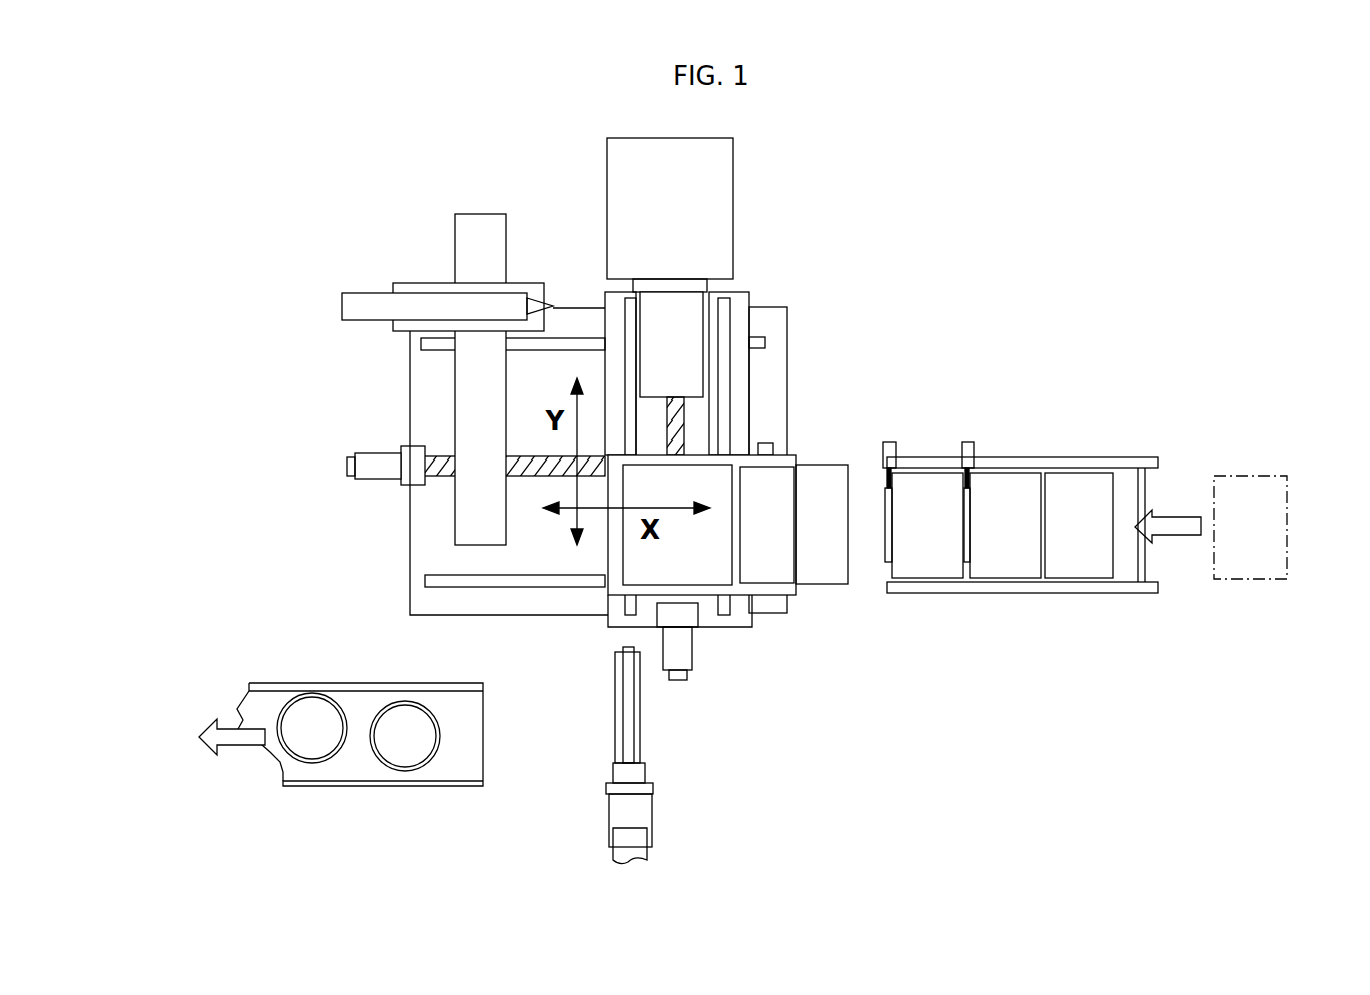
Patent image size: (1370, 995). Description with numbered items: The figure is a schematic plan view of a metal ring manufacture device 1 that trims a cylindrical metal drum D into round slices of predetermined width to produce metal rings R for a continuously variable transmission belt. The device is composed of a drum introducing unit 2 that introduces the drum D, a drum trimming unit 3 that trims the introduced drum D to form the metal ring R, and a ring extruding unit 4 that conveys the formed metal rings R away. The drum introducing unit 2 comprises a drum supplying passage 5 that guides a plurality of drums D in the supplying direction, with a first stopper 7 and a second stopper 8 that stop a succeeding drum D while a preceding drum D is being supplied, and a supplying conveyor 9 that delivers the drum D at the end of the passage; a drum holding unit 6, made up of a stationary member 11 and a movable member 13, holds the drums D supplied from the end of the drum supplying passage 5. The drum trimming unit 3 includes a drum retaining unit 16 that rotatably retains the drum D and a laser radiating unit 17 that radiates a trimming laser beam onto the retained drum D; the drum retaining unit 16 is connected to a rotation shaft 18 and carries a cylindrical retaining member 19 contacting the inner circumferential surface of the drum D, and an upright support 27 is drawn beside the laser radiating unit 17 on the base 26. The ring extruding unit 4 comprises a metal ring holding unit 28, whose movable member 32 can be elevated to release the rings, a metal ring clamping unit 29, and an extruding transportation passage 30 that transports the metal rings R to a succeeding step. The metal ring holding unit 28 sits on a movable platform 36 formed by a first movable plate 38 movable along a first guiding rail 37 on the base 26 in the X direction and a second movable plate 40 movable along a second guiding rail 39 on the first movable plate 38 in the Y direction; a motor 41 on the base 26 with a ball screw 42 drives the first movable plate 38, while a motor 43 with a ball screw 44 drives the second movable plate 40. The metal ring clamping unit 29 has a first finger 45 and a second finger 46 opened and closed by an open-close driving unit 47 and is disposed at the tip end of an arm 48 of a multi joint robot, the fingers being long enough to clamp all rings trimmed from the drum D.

The metal ring manufacture device 1 is at (960, 240).
The drum introducing unit 2 is at (1030, 390).
The drum trimming unit 3 is at (330, 232).
The ring extruding unit 4 is at (304, 624).
The drum supplying passage 5 is at (1122, 455).
The drum holding unit 6 is at (820, 450).
The first stopper 7 is at (888, 442).
The second stopper 8 is at (967, 442).
The supplying conveyor 9 is at (885, 550).
The stationary member 11 is at (772, 575).
The movable member 13 is at (820, 575).
The drum retaining unit 16 is at (750, 200).
The laser radiating unit 17 is at (360, 310).
The rotation shaft 18 is at (652, 285).
The retaining member 19 is at (678, 310).
The base 26 is at (422, 545).
The column 27 is at (455, 405).
The metal ring holding unit 28 is at (708, 580).
The metal ring clamping unit 29 is at (585, 716).
The extruding transportation passage 30 is at (442, 787).
The movable member 32 is at (637, 572).
The movable platform 36 is at (765, 405).
The first guiding rail 37 is at (430, 352).
The first movable plate 38 is at (522, 602).
The second guiding rail 39 is at (616, 312).
The second movable plate 40 is at (743, 597).
The motor 41 is at (346, 467).
The ball screw 42 is at (432, 480).
The motor 43 is at (680, 682).
The ball screw 44 is at (684, 425).
The first finger 45 is at (630, 742).
The second finger 46 is at (617, 742).
The open-close driving unit 47 is at (643, 805).
The arm 48 is at (638, 840).
The drum D is at (947, 568).
The metal ring R is at (312, 765).